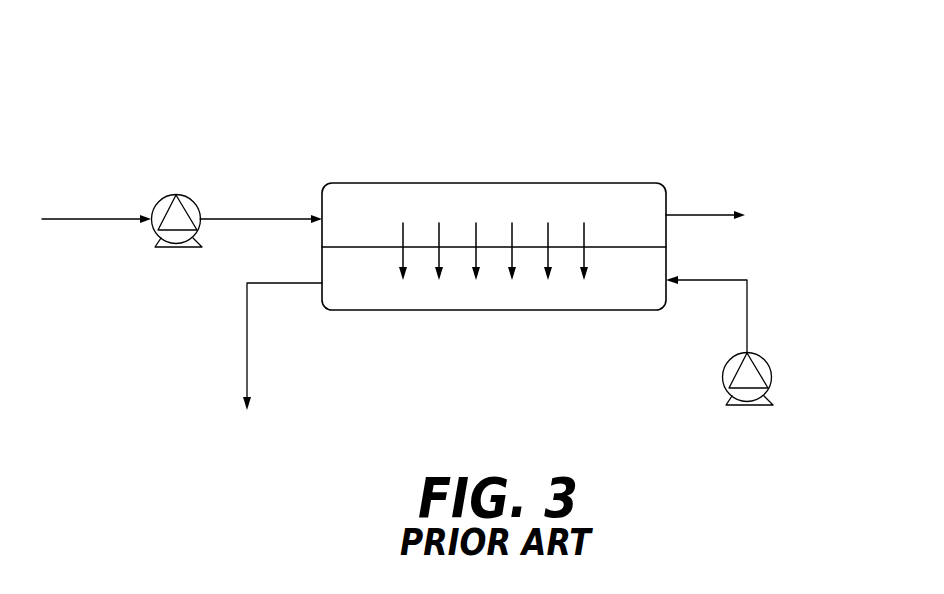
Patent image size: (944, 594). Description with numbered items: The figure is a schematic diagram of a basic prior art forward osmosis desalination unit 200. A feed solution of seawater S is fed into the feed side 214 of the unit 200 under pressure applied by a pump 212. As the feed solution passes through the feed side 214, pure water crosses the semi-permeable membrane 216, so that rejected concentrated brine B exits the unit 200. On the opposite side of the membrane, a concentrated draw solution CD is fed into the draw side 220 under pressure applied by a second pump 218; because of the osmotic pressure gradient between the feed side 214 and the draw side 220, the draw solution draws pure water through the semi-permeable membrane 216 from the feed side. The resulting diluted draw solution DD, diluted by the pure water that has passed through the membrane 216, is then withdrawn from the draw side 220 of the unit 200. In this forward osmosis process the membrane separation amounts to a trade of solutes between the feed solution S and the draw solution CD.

The forward osmosis unit 200 is at (208, 92).
The pump 212 is at (170, 196).
The feed side 214 is at (360, 198).
The semi-permeable membrane 216 is at (616, 247).
The pump 218 is at (772, 371).
The draw side 220 is at (399, 296).